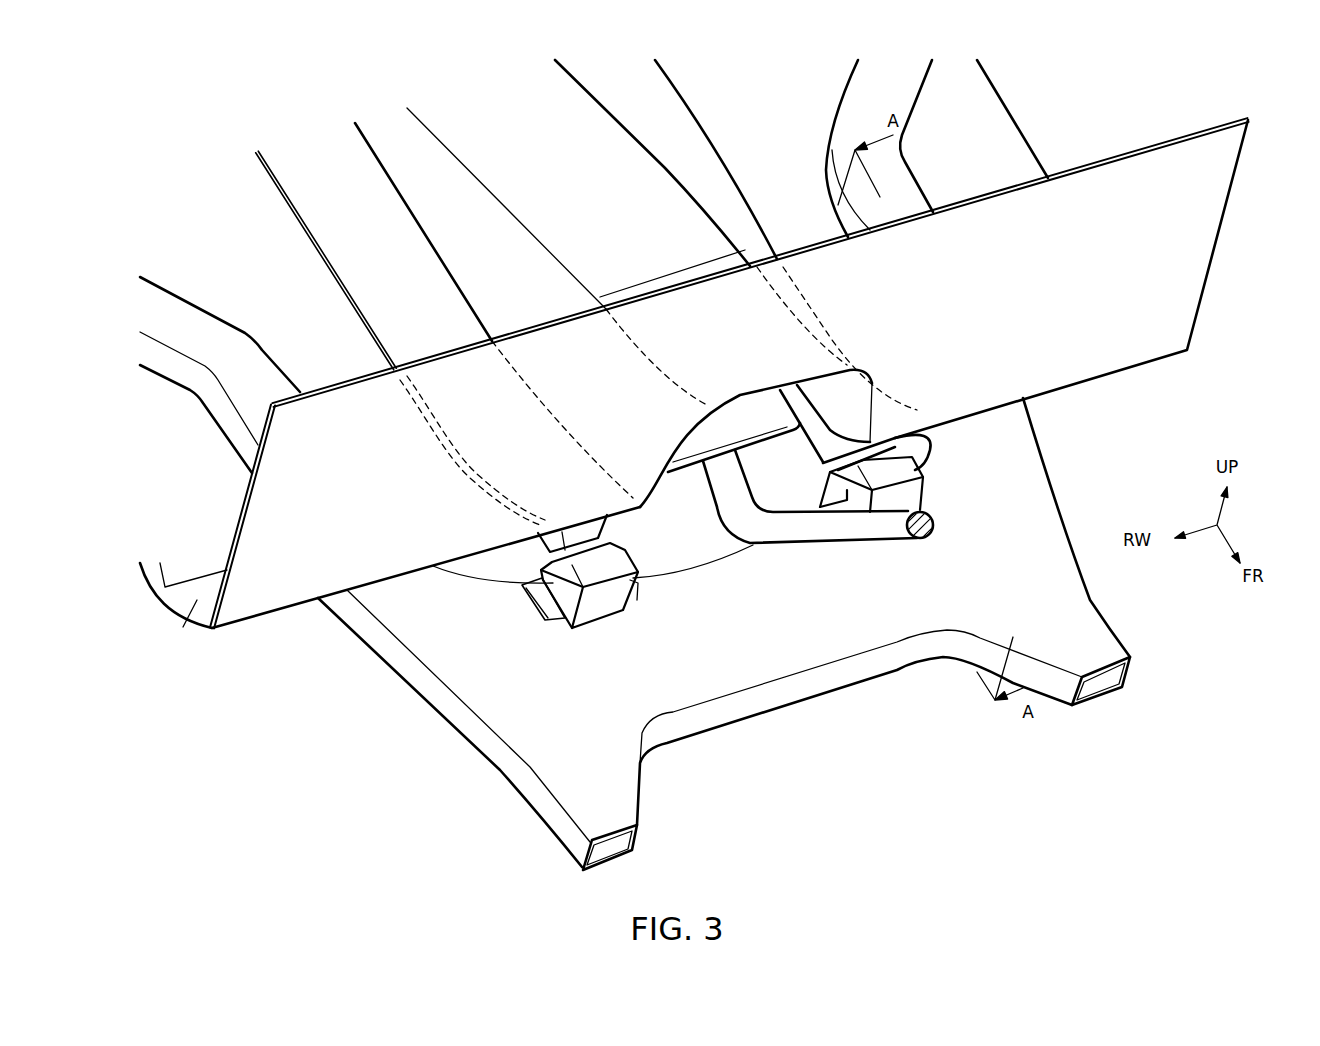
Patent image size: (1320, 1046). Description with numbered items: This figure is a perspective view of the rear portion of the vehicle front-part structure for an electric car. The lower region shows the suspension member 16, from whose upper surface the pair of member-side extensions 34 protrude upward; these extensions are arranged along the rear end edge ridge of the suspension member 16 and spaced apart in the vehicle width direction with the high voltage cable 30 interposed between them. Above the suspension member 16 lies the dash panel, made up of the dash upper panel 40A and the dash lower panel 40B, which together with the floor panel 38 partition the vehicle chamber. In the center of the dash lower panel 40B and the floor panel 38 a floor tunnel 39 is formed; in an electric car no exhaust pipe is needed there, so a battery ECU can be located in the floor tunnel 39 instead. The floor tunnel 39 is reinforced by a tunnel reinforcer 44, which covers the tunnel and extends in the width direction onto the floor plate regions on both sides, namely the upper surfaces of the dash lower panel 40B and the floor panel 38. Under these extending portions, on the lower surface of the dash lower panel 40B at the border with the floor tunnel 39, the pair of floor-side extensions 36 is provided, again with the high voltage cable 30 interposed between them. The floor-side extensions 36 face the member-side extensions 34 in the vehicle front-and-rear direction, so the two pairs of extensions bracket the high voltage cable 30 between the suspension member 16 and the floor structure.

The suspension member 16 is at (702, 735).
The high voltage cable 30 is at (848, 532).
The member-side extension 34 is at (600, 607).
The floor-side extension 36 is at (597, 530).
The floor panel 38 is at (148, 588).
The floor tunnel 39 is at (665, 168).
The dash upper panel 40A is at (275, 577).
The dash lower panel 40B is at (187, 628).
The tunnel reinforcer 44 is at (372, 250).